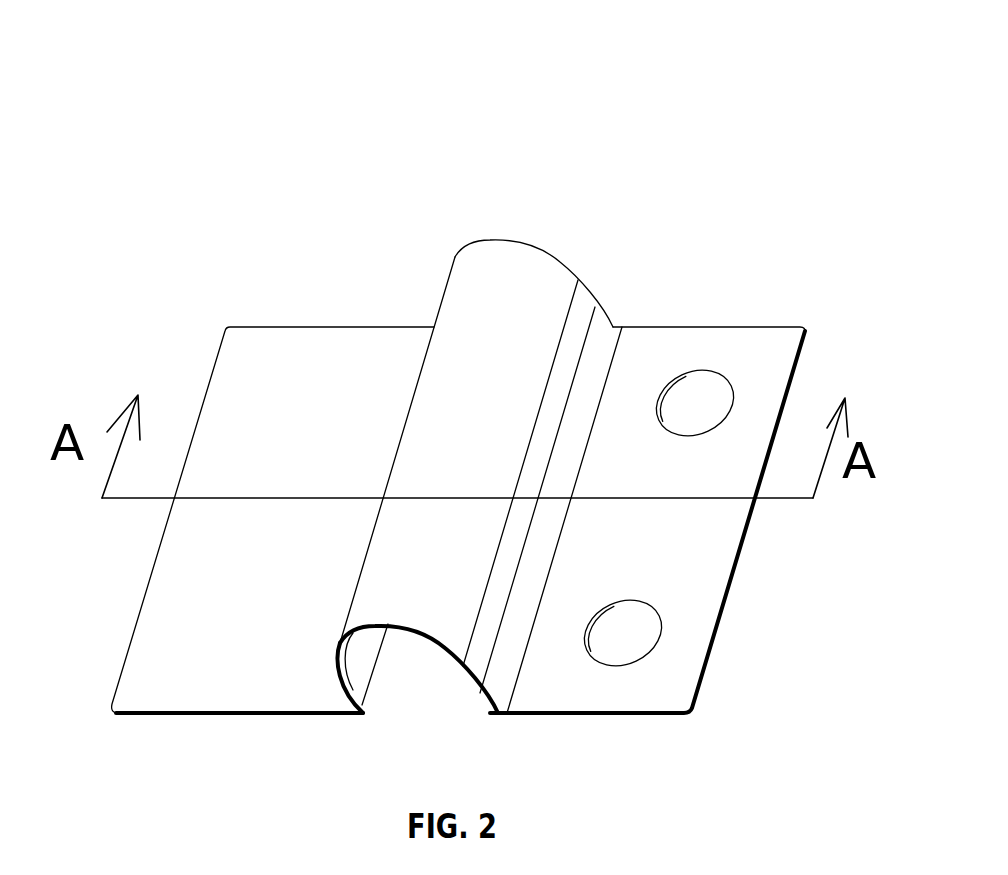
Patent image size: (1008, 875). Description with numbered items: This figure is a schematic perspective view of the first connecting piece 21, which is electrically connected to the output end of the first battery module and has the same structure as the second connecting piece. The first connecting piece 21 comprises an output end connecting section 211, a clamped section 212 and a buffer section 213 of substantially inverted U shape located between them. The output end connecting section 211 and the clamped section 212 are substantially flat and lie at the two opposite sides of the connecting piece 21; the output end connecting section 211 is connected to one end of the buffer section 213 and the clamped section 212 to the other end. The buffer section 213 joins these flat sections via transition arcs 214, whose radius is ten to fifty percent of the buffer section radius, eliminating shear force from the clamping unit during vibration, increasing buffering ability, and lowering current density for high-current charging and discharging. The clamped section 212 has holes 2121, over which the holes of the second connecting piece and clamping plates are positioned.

The first connecting piece 21 is at (330, 150).
The output end connecting section 211 is at (283, 378).
The clamped section 212 is at (757, 350).
The buffer section 213 is at (537, 275).
The transition arc 214 is at (592, 357).
The hole 2121 is at (623, 637).